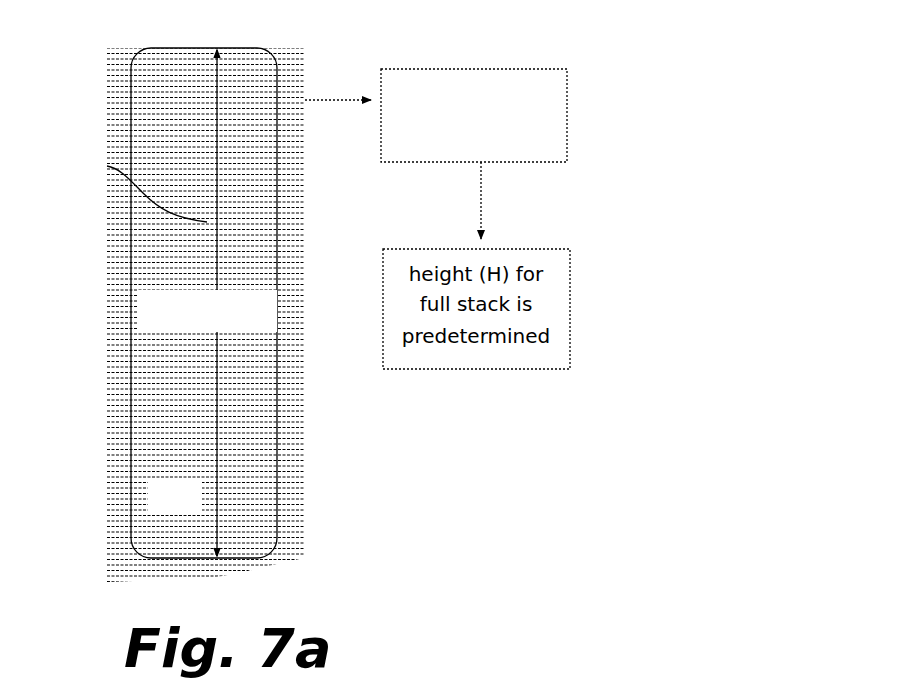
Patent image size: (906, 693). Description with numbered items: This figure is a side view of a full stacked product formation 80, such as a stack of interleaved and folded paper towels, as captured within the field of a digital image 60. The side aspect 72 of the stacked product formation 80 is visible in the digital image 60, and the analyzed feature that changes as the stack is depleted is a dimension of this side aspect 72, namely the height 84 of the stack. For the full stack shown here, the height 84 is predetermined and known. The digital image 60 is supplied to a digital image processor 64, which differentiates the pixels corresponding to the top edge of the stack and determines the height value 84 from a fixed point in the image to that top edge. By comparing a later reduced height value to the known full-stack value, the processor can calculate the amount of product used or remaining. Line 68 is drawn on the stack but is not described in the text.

The stacked product formation 80 is at (121, 48).
The digital image 60 is at (273, 170).
The stack edge line 68 is at (107, 166).
The side aspect 72 is at (175, 496).
The height 84 is at (268, 313).
The digital image processor 64 is at (436, 69).